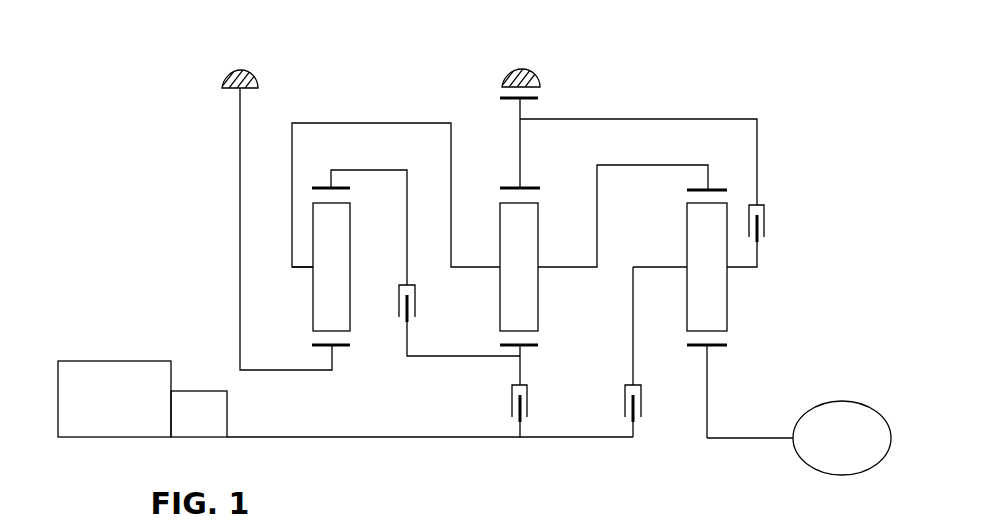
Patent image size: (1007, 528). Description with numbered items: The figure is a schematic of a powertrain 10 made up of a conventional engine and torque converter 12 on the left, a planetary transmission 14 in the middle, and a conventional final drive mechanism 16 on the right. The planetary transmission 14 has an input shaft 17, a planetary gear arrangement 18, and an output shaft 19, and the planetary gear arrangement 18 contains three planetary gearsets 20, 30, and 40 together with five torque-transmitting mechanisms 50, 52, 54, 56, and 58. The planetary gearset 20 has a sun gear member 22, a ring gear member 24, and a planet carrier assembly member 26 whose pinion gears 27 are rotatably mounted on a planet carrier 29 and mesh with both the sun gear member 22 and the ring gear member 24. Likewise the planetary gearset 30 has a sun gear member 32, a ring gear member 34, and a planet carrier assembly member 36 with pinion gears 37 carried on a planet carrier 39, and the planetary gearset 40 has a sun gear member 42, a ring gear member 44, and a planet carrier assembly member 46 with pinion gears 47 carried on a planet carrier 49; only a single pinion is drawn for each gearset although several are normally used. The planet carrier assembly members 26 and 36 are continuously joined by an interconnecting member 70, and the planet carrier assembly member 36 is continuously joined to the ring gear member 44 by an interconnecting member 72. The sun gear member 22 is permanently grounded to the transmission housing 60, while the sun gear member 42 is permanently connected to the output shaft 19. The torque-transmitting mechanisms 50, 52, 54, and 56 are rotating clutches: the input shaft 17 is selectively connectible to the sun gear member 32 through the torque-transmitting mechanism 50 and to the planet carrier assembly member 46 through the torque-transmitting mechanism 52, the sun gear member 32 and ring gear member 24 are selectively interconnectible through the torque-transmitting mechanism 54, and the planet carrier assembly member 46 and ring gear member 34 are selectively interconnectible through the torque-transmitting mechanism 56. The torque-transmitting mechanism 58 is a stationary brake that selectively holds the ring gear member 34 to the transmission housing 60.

The powertrain 10 is at (180, 210).
The engine and torque converter 12 is at (116, 357).
The planetary transmission 14 is at (483, 64).
The final drive mechanism 16 is at (873, 403).
The input shaft 17 is at (243, 439).
The planetary gear arrangement 18 is at (452, 404).
The output shaft 19 is at (770, 440).
The planetary gearset 20 is at (328, 272).
The sun gear member 22 is at (345, 350).
The ring gear member 24 is at (322, 186).
The planet carrier assembly member 26 is at (299, 251).
The pinion gears 27 is at (322, 238).
The planet carrier 29 is at (300, 262).
The planetary gearset 30 is at (516, 263).
The sun gear member 32 is at (510, 348).
The ring gear member 34 is at (510, 186).
The planet carrier assembly member 36 is at (516, 242).
The pinion gears 37 is at (534, 223).
The planet carrier 39 is at (470, 266).
The planetary gearset 40 is at (702, 283).
The sun gear member 42 is at (717, 350).
The ring gear member 44 is at (717, 187).
The planet carrier assembly member 46 is at (684, 235).
The pinion gears 47 is at (693, 230).
The planet carrier 49 is at (740, 270).
The torque-transmitting mechanism 50 is at (532, 412).
The torque-transmitting mechanism 52 is at (620, 412).
The torque-transmitting mechanism 54 is at (418, 300).
The torque-transmitting mechanism 56 is at (769, 220).
The torque-transmitting mechanism 58 is at (497, 98).
The transmission housing 60 is at (247, 77).
The interconnecting member 70 is at (369, 122).
The interconnecting member 72 is at (620, 164).